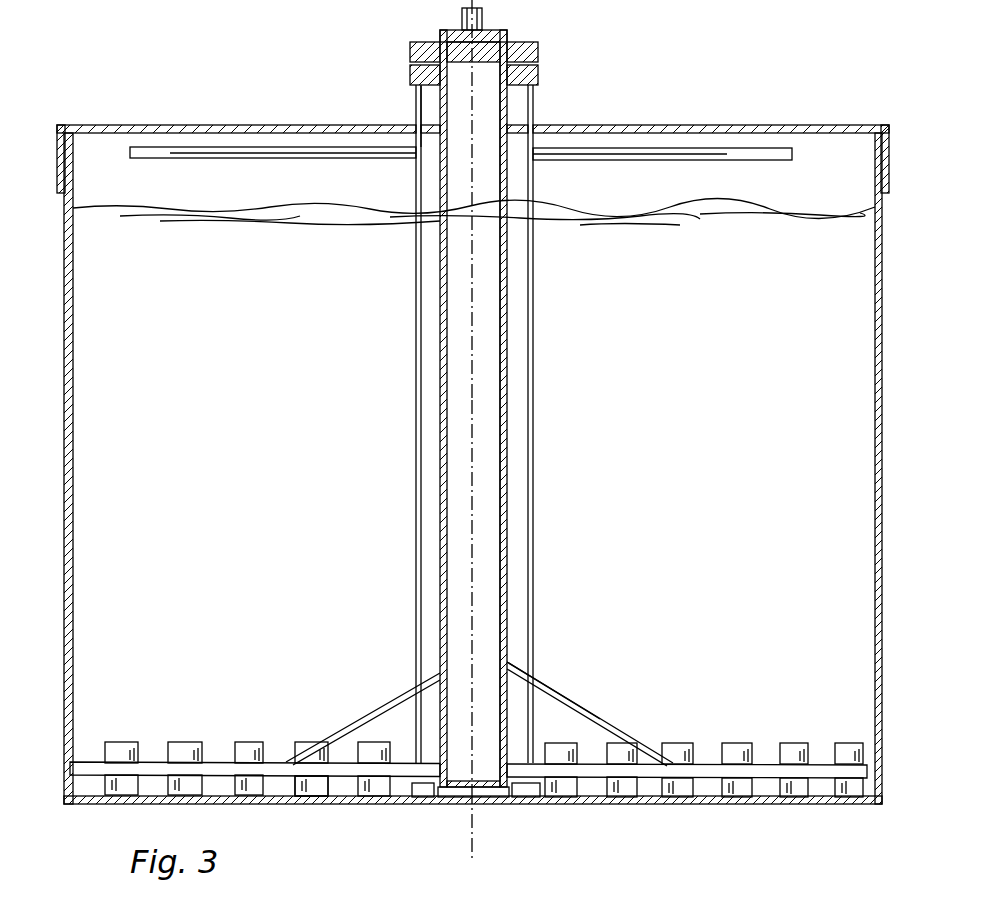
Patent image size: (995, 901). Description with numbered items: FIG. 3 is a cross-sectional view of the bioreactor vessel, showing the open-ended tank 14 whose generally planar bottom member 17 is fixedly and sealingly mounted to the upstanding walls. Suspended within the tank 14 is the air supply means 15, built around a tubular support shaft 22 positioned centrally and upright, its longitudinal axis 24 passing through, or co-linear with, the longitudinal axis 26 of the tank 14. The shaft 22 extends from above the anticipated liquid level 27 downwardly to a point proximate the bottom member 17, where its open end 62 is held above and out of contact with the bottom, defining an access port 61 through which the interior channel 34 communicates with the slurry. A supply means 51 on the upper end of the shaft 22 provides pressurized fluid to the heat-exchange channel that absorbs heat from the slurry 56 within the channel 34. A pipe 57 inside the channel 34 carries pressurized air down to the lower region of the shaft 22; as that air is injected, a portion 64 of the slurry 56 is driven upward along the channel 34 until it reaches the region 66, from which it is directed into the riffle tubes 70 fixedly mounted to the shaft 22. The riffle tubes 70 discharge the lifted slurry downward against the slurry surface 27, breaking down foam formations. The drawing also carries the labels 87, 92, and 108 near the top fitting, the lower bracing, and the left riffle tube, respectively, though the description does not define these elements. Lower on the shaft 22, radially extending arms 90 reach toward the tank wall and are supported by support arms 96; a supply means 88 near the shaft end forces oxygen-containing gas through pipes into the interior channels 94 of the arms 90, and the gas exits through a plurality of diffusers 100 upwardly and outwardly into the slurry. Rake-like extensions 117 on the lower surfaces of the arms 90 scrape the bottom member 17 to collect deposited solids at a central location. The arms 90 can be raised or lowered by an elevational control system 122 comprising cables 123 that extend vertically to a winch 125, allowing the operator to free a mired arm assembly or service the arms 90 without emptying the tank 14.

The tank 14 is at (69, 388).
The air supply means 15 is at (440, 512).
The bottom member 17 is at (860, 804).
The tubular support shaft 22 is at (506, 410).
The longitudinal axis 24 is at (473, 840).
The longitudinal axis 26 is at (473, 255).
The liquid level 27 is at (222, 205).
The channel 34 is at (476, 553).
The supply means 51 is at (536, 42).
The slurry 56 is at (487, 322).
The pipe 57 is at (497, 31).
The access port 61 is at (500, 805).
The open end 62 is at (447, 800).
The portion of the slurry 64 is at (70, 138).
The region 66 is at (487, 157).
The riffle tubes 70 is at (312, 157).
The top cap 87 is at (447, 30).
The supply means 88 is at (412, 42).
The radially extending arms 90 is at (335, 790).
The braces 92 is at (372, 828).
The channels 94 is at (645, 772).
The support arm 96 is at (548, 672).
The diffusers 100 is at (245, 742).
The plate inner edge 108 is at (388, 160).
The rake-like extensions 117 is at (185, 783).
The elevational control system 122 is at (422, 118).
The cables 123 is at (533, 347).
The winch 125 is at (410, 73).